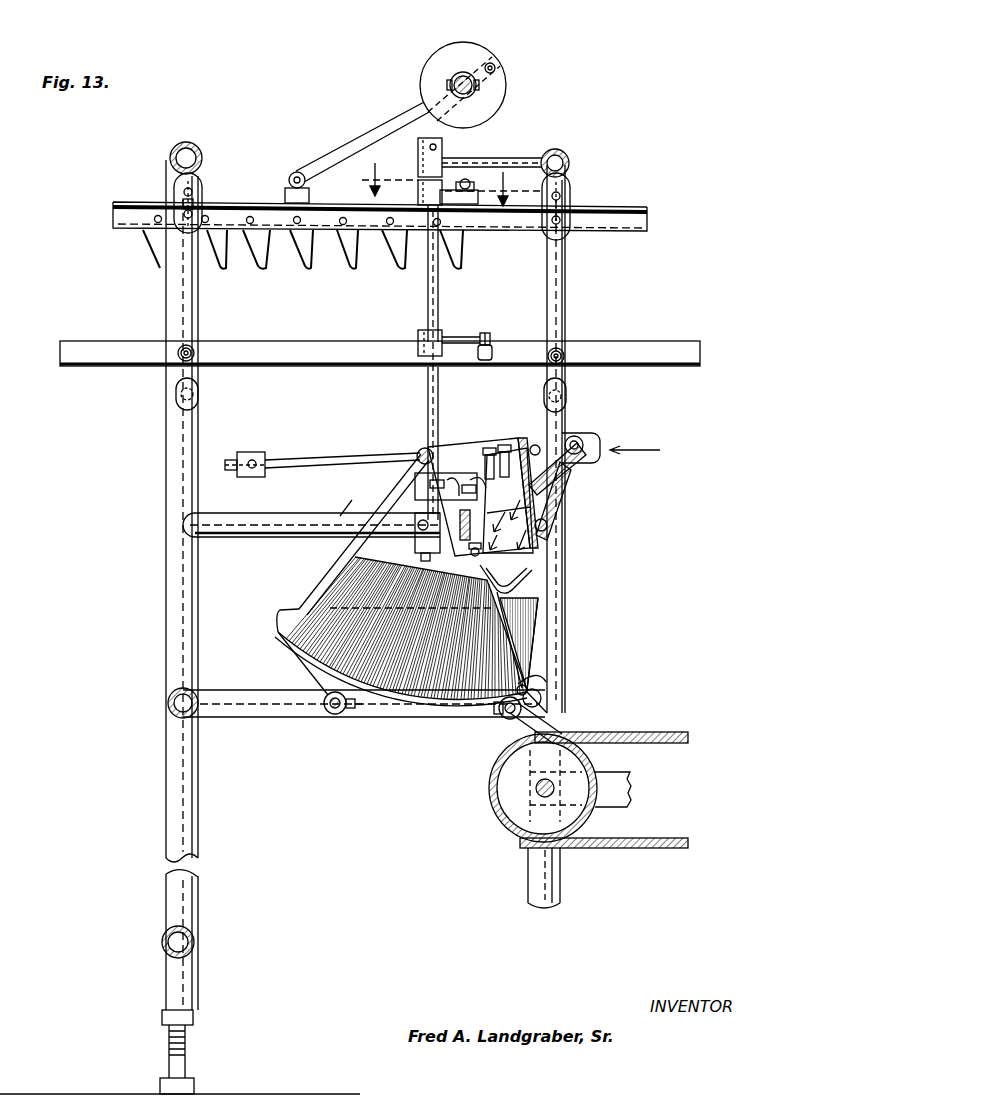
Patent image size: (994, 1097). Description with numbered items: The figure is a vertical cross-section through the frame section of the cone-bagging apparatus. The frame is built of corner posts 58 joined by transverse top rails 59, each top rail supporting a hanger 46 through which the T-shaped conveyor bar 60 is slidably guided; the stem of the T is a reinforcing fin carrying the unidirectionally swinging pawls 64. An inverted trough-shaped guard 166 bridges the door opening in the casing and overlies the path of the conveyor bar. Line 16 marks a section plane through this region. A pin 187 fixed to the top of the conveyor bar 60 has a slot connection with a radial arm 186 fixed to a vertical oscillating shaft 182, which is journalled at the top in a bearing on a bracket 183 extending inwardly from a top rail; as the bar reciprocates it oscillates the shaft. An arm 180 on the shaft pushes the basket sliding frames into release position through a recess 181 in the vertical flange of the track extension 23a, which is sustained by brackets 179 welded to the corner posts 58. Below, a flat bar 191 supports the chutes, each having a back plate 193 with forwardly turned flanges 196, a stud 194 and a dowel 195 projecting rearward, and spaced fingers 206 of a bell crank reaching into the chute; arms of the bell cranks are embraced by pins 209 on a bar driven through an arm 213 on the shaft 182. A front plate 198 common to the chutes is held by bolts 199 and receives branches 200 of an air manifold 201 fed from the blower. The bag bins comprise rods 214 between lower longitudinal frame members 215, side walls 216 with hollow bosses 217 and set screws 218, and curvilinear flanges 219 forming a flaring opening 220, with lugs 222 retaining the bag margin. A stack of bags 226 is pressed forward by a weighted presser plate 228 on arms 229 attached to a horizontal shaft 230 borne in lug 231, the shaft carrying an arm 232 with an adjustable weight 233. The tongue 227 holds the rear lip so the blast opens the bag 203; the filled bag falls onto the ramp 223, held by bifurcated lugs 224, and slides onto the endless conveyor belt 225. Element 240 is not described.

The corner post 58 is at (166, 481).
The top rail 59 is at (198, 147).
The hanger 46 is at (201, 205).
The conveyor bar 60 is at (615, 207).
The unidirectionally swinging pawl 64 is at (167, 258).
The inverted trough-shaped guard 166 is at (366, 136).
The section line 16 is at (451, 181).
The radial arm 186 is at (448, 186).
The pin 187 is at (470, 180).
The bracket 183 is at (530, 156).
The vertical oscillating shaft 182 is at (440, 297).
The arm 180 is at (460, 336).
The recess 181 is at (489, 345).
The track extension 23a is at (303, 350).
The bracket 179 is at (179, 397).
The adjustable weight 233 is at (252, 452).
The arm 232 is at (310, 459).
The horizontal shaft 230 is at (418, 452).
The arm 213 is at (402, 472).
The arm 229 is at (372, 498).
The side wall 216 is at (290, 610).
The weighted presser plate 228 is at (282, 624).
The stack of bags 226 is at (300, 668).
The lower longitudinal frame member 215 is at (252, 722).
The curvilinear flange 219 is at (412, 718).
The rod 214 is at (336, 716).
The set screw 218 is at (362, 706).
The hollow boss 217 is at (497, 707).
The flaring opening 220 is at (528, 692).
The lug 222 is at (530, 684).
The ramp 223 is at (542, 701).
The bag 203 is at (539, 612).
The bifurcated lug 224 is at (510, 728).
The endless conveyor belt 225 is at (652, 732).
The air manifold 201 is at (586, 441).
The bolt 199 is at (540, 447).
The front plate 198 is at (566, 494).
The branch 200 is at (560, 509).
The back plate 193 is at (487, 440).
The lug 231 is at (455, 442).
The flange 196 is at (480, 450).
The finger 206 is at (504, 450).
The flat bar 191 is at (491, 526).
The stud 194 is at (487, 486).
The pin 209 is at (446, 497).
The block 240 is at (420, 505).
The dowel 195 is at (470, 556).
The tongue 227 is at (498, 568).